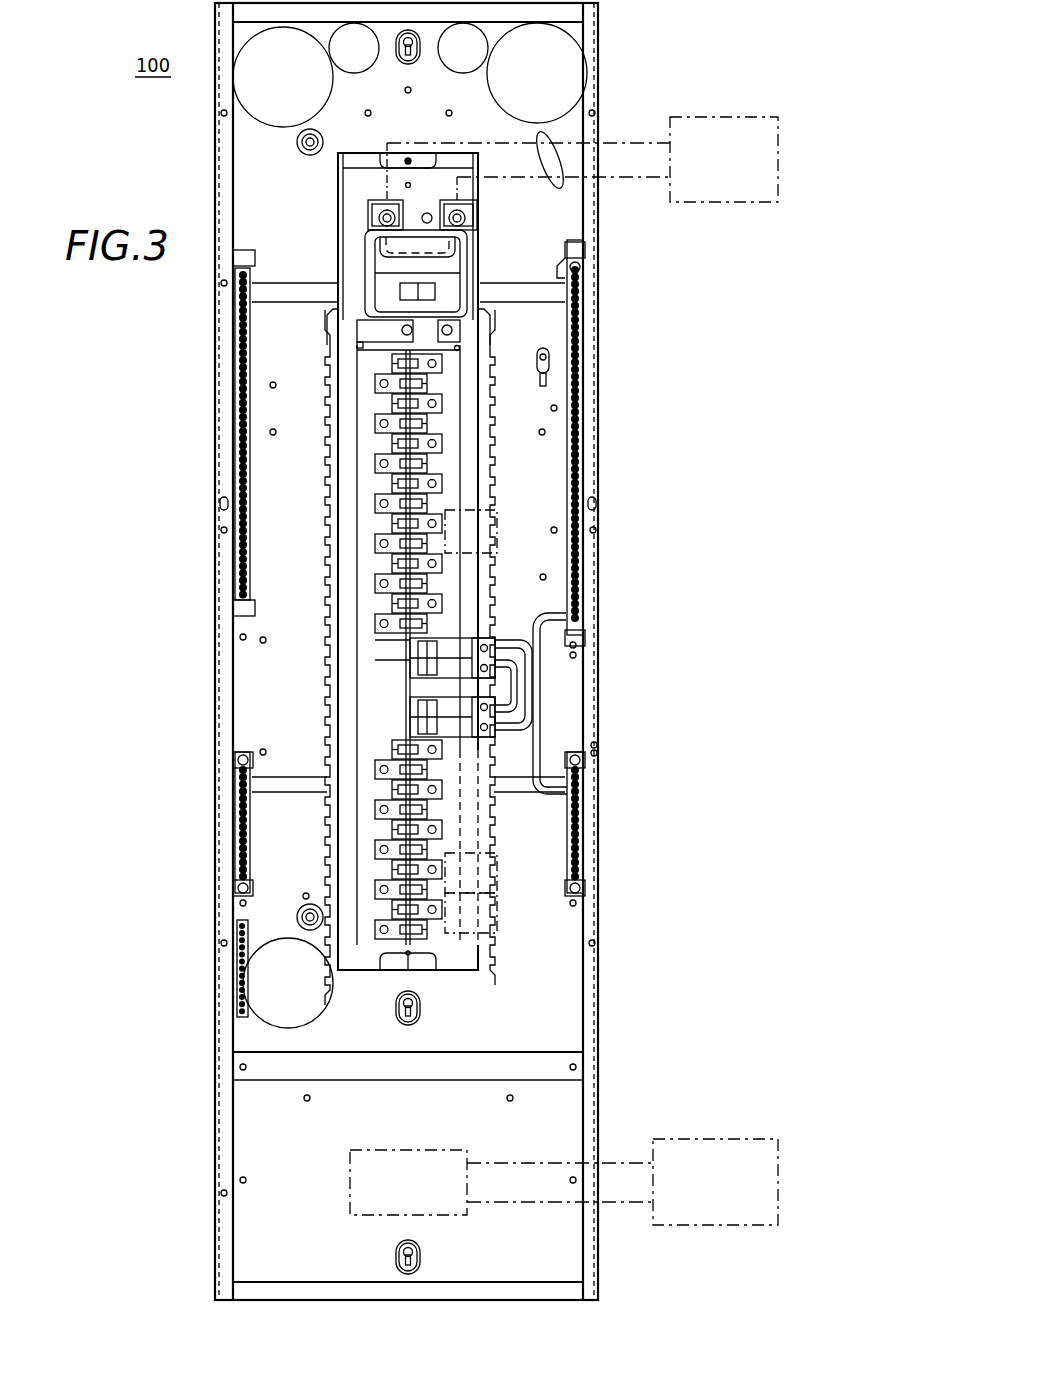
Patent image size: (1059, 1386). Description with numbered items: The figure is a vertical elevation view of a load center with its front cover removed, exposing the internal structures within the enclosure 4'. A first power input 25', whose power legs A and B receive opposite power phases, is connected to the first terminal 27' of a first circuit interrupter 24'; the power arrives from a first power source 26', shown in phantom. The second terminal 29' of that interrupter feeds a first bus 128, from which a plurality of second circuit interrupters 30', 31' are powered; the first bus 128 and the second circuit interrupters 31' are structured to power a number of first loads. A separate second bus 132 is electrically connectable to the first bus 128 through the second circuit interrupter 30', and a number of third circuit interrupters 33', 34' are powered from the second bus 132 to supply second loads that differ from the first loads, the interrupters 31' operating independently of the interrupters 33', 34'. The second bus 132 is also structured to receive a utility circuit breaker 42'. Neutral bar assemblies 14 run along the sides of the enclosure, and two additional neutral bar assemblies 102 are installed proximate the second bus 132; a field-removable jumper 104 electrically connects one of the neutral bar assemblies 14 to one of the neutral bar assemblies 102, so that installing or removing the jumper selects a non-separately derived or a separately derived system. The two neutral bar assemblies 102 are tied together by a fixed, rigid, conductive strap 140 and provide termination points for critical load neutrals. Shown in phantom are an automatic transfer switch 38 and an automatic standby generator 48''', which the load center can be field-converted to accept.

The enclosure 4' is at (445, 651).
The neutral bar assemblies 14 is at (235, 423).
The first circuit interrupter 24' is at (387, 561).
The first power input 25' is at (542, 138).
The first power source 26' is at (588, 182).
The first terminal 27' is at (387, 186).
The second terminal 29' is at (417, 334).
The second circuit interrupter 30' is at (460, 634).
The second circuit interrupters 31' is at (500, 529).
The third circuit interrupters 33' is at (501, 916).
The third circuit interrupters 34' is at (501, 876).
The automatic transfer switch 38 is at (396, 1150).
The utility circuit breaker 42' is at (498, 688).
The automatic standby generator 48''' is at (715, 1168).
The neutral bar assemblies 102 is at (237, 828).
The field-removable jumper 104 is at (542, 733).
The first bus 128 is at (455, 479).
The second bus 132 is at (455, 830).
The conductive strap 140 is at (520, 785).